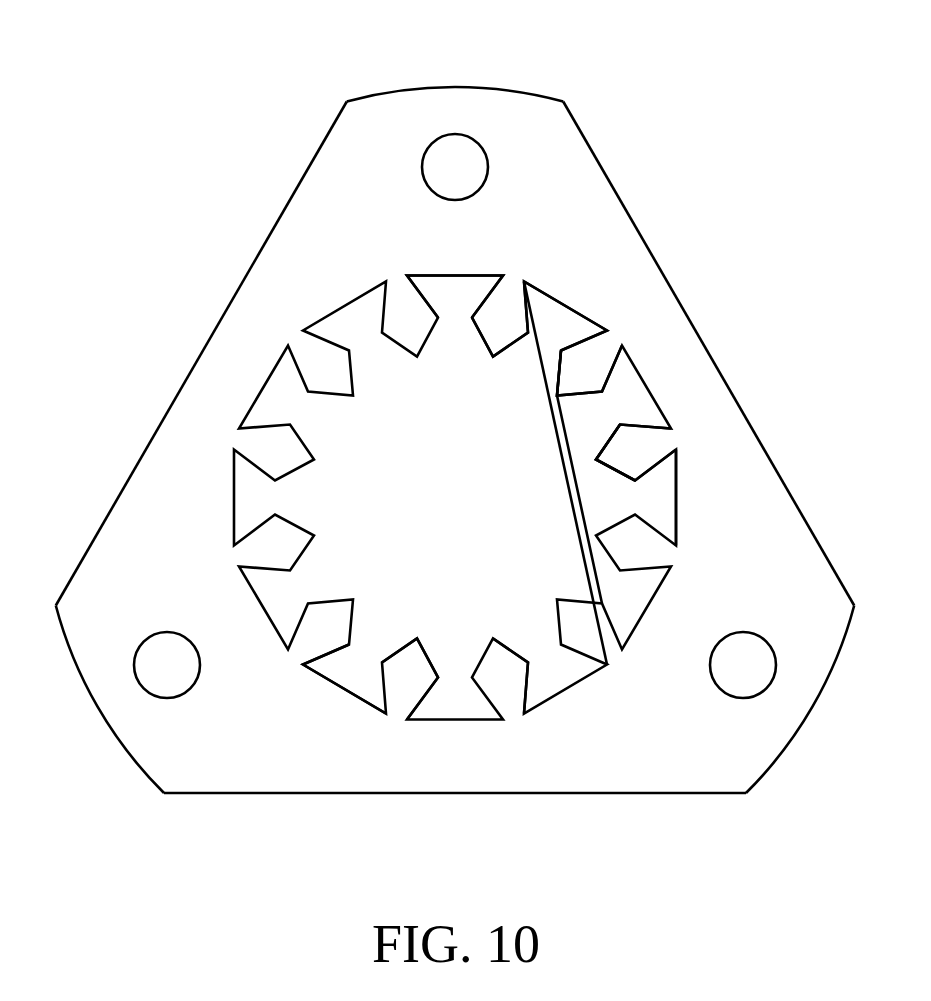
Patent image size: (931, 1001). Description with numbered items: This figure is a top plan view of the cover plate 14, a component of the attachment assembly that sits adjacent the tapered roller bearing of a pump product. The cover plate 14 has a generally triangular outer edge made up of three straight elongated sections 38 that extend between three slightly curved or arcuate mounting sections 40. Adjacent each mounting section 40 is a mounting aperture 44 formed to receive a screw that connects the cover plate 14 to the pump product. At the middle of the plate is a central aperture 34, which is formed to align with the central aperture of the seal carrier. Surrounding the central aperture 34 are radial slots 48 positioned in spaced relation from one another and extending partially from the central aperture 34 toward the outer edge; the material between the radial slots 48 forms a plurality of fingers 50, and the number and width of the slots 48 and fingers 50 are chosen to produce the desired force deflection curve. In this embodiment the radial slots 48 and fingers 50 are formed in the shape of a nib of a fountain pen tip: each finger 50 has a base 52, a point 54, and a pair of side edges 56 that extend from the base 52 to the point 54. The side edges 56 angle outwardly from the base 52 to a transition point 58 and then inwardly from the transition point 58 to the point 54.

The cover plate 14 is at (445, 441).
The central aperture 34 is at (441, 507).
The straight elongated section 38 is at (202, 348).
The arcuate mounting section 40 is at (455, 85).
The mounting aperture 44 is at (428, 152).
The radial slot 48 is at (455, 302).
The finger 50 is at (498, 336).
The base 52 is at (677, 440).
The point 54 is at (597, 460).
The side edge 56 is at (608, 442).
The transition point 58 is at (537, 662).